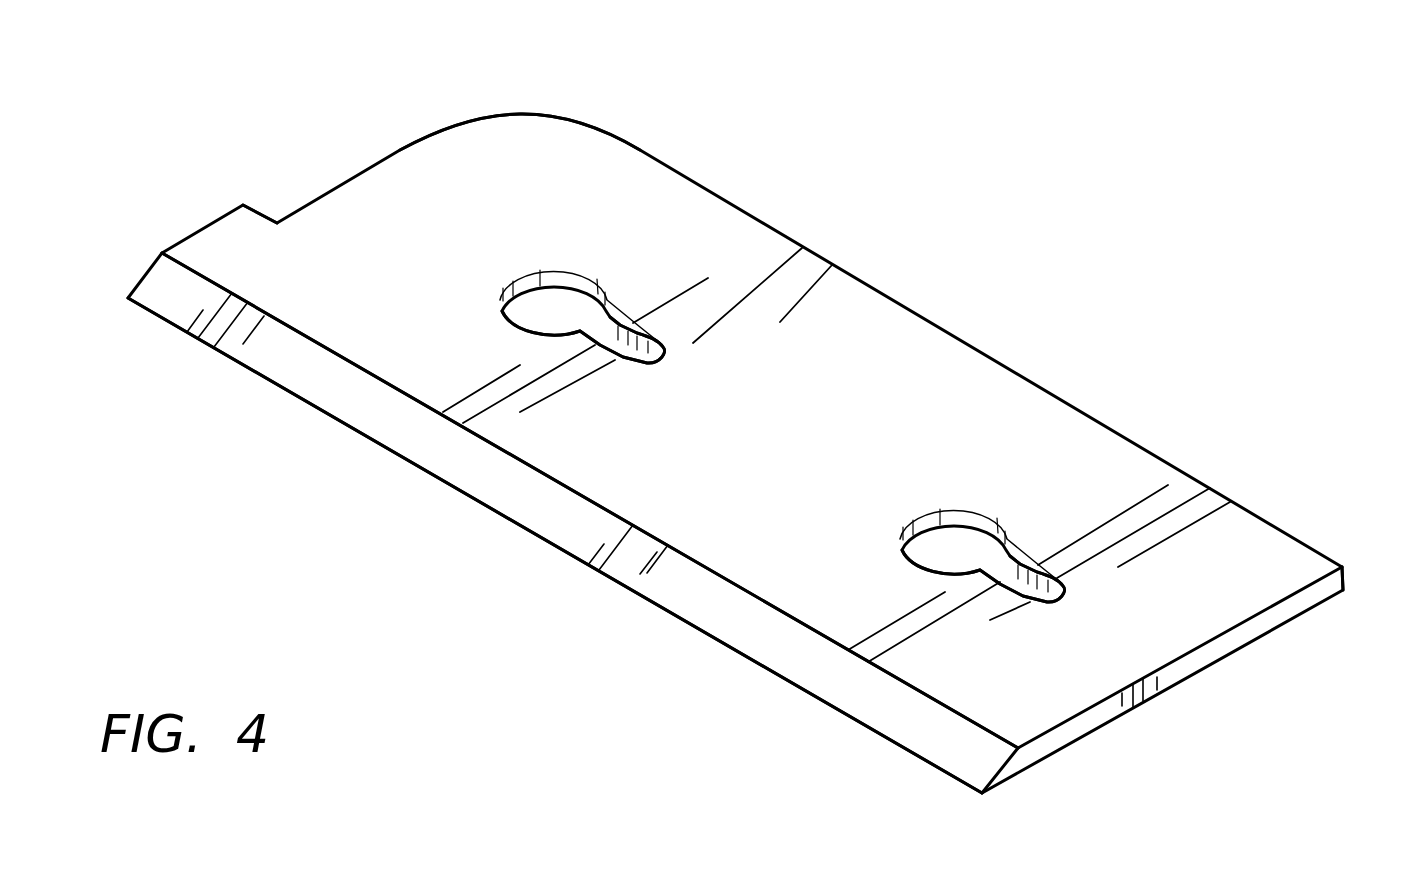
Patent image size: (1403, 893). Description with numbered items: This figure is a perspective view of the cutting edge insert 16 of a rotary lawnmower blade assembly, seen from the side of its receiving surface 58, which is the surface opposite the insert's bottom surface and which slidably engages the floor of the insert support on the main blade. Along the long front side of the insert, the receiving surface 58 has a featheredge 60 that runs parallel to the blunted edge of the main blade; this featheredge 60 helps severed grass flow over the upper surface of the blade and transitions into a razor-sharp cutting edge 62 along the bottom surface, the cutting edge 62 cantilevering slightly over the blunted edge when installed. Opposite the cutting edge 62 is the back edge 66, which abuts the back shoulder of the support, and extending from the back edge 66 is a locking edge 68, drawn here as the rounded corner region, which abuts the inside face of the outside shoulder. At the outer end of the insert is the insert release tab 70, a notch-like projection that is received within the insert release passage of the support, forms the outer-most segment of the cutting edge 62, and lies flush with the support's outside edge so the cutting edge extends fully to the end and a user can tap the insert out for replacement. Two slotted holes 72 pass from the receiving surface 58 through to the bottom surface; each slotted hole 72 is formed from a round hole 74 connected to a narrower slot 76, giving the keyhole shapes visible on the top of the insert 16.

The cutting edge insert 16 is at (763, 203).
The receiving surface 58 is at (775, 456).
The featheredge 60 is at (688, 605).
The cutting edge 62 is at (617, 585).
The back edge 66 is at (1345, 566).
The locking edge 68 is at (342, 190).
The insert release tab 70 is at (202, 247).
The slotted hole 72 is at (560, 257).
The round hole 74 is at (530, 293).
The slot 76 is at (617, 345).